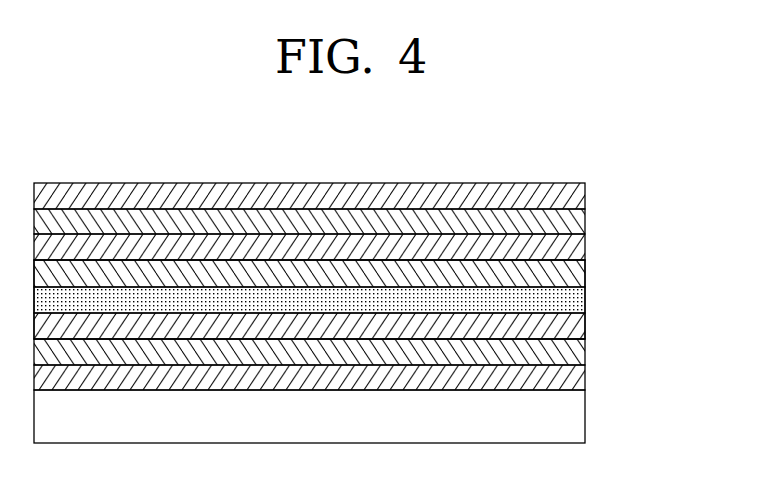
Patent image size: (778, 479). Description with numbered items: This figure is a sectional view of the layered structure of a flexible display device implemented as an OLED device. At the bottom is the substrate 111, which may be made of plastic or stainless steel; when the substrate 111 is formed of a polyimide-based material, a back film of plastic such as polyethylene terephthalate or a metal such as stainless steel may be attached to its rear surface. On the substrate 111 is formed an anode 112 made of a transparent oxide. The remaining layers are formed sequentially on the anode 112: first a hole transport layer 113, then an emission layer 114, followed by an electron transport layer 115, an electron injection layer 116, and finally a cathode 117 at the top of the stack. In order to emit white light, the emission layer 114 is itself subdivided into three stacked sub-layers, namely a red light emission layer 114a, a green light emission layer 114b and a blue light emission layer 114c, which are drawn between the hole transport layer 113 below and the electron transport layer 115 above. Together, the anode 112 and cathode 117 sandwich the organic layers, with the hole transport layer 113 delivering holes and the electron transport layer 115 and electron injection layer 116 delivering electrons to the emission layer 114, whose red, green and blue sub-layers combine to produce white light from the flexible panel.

The substrate 111 is at (582, 417).
The anode 112 is at (582, 378).
The hole transport layer 113 is at (582, 353).
The emission layer 114 is at (369, 299).
The red light emission layer 114a is at (582, 326).
The green light emission layer 114b is at (582, 300).
The blue light emission layer 114c is at (582, 273).
The electron transport layer 115 is at (582, 245).
The electron injection layer 116 is at (582, 220).
The cathode 117 is at (582, 195).